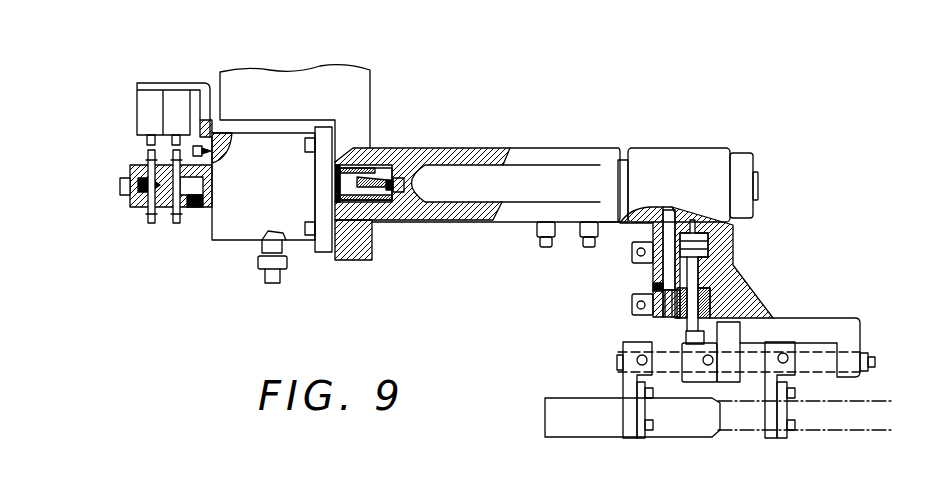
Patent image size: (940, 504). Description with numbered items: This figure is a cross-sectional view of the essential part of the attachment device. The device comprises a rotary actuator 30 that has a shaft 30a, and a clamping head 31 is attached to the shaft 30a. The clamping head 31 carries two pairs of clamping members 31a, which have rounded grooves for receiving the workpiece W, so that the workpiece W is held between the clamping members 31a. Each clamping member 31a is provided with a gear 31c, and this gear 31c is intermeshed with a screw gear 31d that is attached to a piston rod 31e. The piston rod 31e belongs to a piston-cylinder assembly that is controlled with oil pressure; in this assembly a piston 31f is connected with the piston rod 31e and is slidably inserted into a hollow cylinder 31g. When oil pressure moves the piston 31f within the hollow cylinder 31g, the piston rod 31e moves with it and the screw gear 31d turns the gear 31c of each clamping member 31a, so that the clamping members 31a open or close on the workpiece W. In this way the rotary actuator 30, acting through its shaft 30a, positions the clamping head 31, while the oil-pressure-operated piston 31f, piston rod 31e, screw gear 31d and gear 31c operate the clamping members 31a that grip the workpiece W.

The rotary actuator 30 is at (237, 233).
The shaft 30a is at (460, 175).
The clamping head 31 is at (772, 322).
The clamping members 31a is at (645, 438).
The gear 31c is at (696, 365).
The screw gear 31d is at (688, 337).
The piston rod 31e is at (702, 306).
The piston 31f is at (686, 243).
The hollow cylinder 31g is at (666, 263).
The workpiece W is at (577, 398).